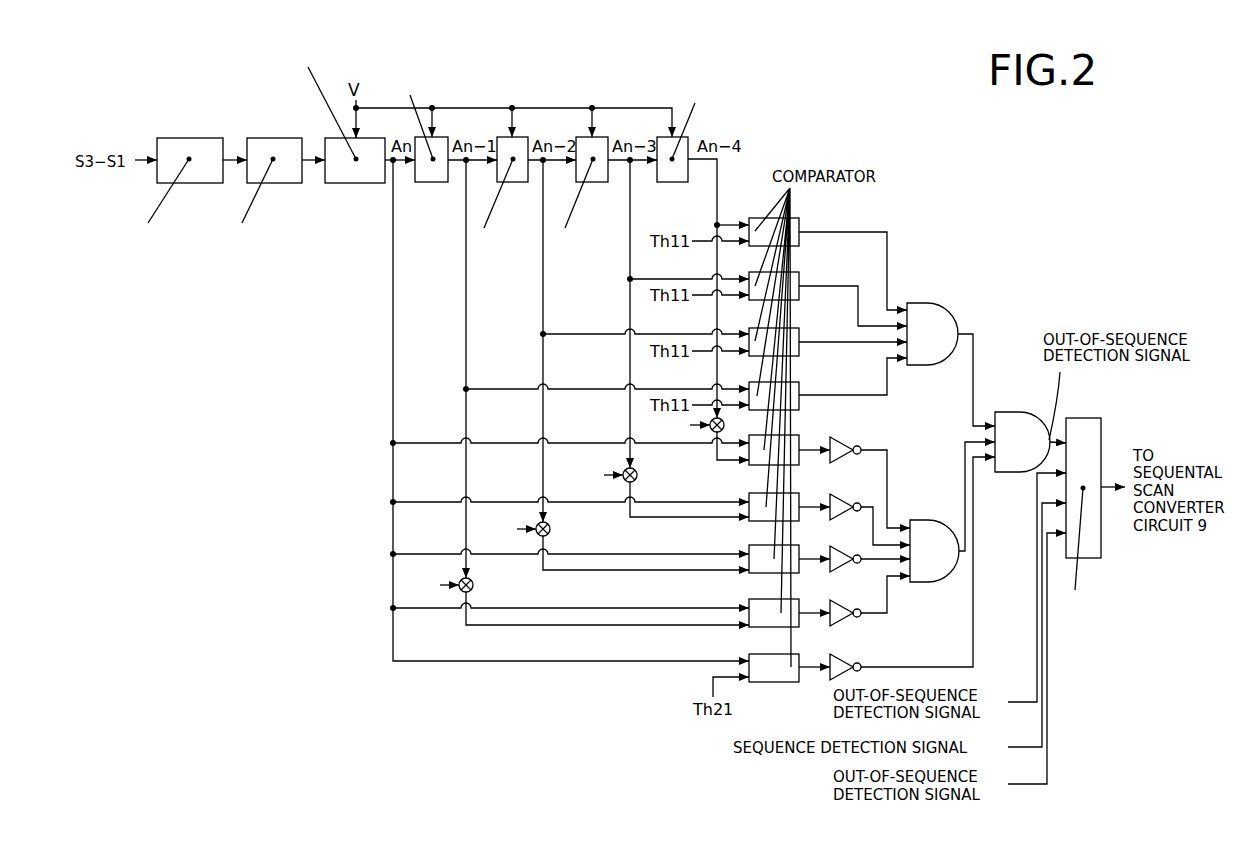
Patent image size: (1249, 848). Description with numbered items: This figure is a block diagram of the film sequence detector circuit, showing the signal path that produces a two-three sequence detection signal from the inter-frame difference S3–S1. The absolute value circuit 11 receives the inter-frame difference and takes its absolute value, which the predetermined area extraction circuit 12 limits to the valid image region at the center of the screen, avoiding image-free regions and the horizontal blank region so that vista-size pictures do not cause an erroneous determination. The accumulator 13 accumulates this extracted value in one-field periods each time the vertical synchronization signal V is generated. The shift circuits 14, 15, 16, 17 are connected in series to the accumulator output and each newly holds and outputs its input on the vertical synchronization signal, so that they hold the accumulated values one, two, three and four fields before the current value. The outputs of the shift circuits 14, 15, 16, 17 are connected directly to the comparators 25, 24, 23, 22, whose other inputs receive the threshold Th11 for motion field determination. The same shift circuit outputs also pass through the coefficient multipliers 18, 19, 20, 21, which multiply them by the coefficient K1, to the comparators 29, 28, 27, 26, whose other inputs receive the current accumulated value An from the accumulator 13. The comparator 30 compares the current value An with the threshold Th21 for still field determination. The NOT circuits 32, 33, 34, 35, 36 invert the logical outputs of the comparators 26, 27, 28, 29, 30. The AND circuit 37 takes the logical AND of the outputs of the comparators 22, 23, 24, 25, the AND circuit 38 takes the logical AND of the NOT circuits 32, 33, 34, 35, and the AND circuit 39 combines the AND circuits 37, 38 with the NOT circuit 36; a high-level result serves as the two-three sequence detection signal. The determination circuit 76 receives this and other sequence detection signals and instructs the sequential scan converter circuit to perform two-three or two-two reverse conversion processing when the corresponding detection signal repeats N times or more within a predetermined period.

The absolute value circuit 11 is at (200, 138).
The predetermined area extraction circuit 12 is at (284, 138).
The accumulator 13 is at (360, 183).
The shift circuit 14 is at (432, 182).
The shift circuit 15 is at (515, 182).
The shift circuit 16 is at (594, 182).
The shift circuit 17 is at (674, 182).
The coefficient multiplier 18 is at (473, 585).
The coefficient multiplier 19 is at (550, 529).
The coefficient multiplier 20 is at (637, 475).
The coefficient multiplier 21 is at (724, 425).
The comparator 22 is at (799, 222).
The comparator 23 is at (799, 276).
The comparator 24 is at (799, 332).
The comparator 25 is at (799, 386).
The comparator 26 is at (799, 440).
The comparator 27 is at (799, 497).
The comparator 28 is at (799, 549).
The comparator 29 is at (799, 603).
The comparator 30 is at (799, 658).
The NOT circuit 32 is at (842, 436).
The NOT circuit 33 is at (842, 493).
The NOT circuit 34 is at (842, 545).
The NOT circuit 35 is at (842, 599).
The NOT circuit 36 is at (842, 653).
The AND circuit 37 is at (922, 303).
The AND circuit 38 is at (925, 520).
The AND circuit 39 is at (1010, 412).
The determination circuit 76 is at (1101, 422).